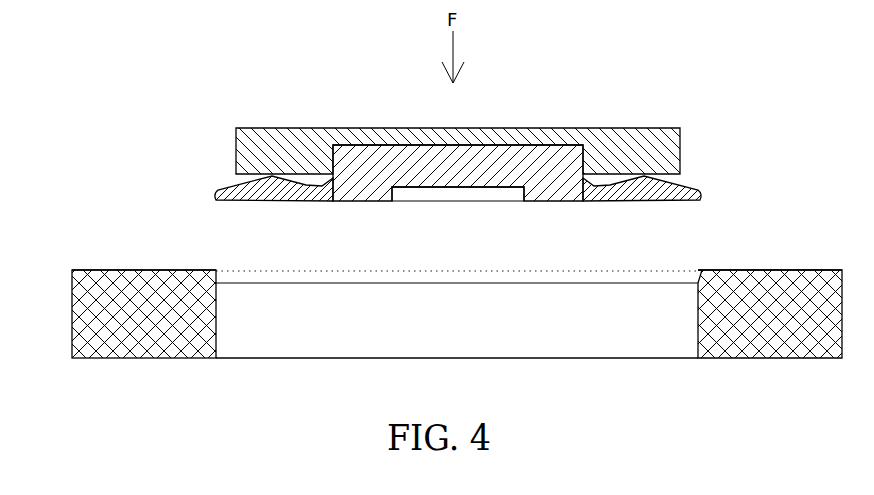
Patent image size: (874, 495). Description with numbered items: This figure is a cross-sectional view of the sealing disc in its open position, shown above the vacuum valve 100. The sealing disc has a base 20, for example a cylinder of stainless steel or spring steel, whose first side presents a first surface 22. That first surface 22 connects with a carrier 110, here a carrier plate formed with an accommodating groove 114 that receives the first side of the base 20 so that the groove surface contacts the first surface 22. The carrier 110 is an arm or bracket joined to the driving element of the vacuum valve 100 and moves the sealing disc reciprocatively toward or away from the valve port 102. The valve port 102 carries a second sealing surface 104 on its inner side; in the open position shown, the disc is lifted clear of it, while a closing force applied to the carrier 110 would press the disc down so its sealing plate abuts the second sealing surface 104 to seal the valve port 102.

The base 20 is at (392, 146).
The first surface 22 is at (477, 142).
The carrier 110 is at (660, 131).
The accommodating groove 114 is at (535, 145).
The vacuum valve 100 is at (72, 270).
The valve port 102 is at (237, 249).
The second sealing surface 104 is at (213, 272).